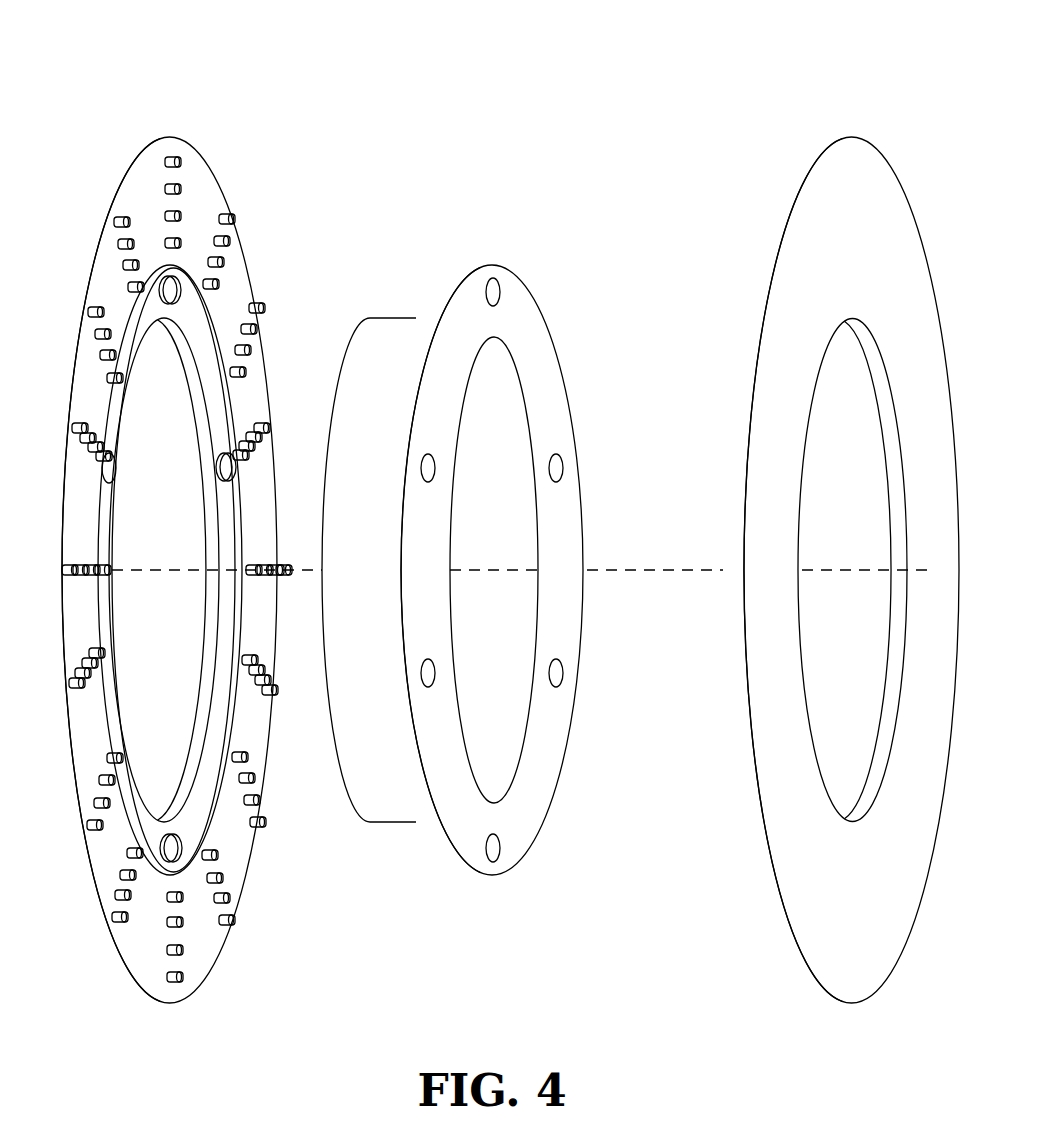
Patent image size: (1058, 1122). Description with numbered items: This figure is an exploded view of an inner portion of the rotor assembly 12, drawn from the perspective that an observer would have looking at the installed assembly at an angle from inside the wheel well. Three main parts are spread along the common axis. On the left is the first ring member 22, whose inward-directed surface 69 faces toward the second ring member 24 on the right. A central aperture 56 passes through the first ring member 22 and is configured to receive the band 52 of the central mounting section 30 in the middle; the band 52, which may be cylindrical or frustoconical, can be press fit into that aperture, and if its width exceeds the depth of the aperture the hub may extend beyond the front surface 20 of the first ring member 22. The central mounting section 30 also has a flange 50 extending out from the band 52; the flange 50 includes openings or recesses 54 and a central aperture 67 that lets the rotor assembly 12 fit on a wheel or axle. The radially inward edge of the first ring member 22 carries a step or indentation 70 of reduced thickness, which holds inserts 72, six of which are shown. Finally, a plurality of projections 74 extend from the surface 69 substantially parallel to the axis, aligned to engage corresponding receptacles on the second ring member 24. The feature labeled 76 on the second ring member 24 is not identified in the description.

The rotor assembly 12 is at (587, 118).
The front surface 20 is at (871, 197).
The first ring member 22 is at (218, 163).
The second ring member 24 is at (752, 244).
The central mounting section 30 is at (447, 265).
The flange 50 is at (557, 413).
The band 52 is at (368, 363).
The openings or recesses 54 is at (500, 292).
The aperture 56 is at (112, 610).
The central aperture 67 is at (452, 612).
The surface 69 is at (253, 387).
The indentation 70 is at (212, 357).
The inserts 72 is at (222, 478).
The projections 74 is at (257, 303).
The central opening 76 is at (806, 464).